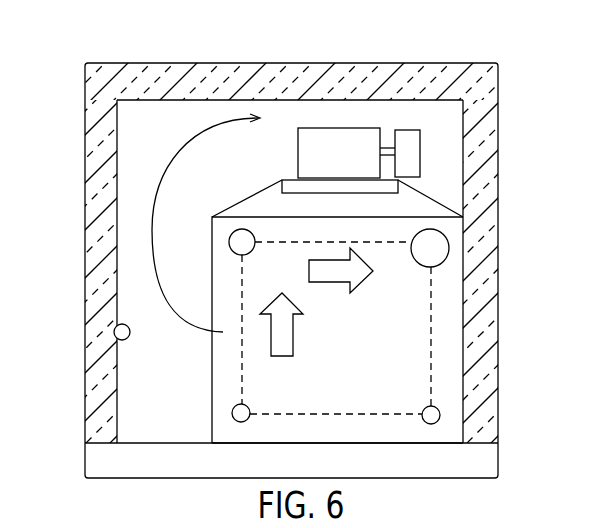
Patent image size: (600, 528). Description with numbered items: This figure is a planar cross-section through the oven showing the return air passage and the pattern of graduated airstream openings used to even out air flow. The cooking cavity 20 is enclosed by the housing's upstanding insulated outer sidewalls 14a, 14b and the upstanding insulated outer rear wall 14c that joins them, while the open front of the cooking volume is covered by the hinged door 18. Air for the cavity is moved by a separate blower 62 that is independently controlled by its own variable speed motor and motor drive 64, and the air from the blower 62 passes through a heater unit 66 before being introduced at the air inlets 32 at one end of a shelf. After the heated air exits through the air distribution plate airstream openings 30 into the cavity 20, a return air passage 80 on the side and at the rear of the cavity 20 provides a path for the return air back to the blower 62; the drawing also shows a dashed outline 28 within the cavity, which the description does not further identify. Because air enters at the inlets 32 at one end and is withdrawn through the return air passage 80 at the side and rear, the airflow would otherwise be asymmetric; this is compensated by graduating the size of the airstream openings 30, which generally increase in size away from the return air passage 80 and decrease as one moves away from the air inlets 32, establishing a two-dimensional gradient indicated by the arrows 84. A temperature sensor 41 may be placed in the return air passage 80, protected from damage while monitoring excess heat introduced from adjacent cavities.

The outer sidewall 14a is at (97, 97).
The outer sidewall 14b is at (483, 322).
The outer rear wall 14c is at (302, 82).
The hinged door 18 is at (463, 463).
The cooking cavity 20 is at (447, 403).
The belt path 28 is at (414, 367).
The airstream openings 30 is at (449, 255).
The air inlets 32 is at (408, 207).
The temperature sensor 41 is at (116, 324).
The blower 62 is at (342, 128).
The motor and motor drive 64 is at (421, 152).
The heater unit 66 is at (335, 187).
The return air passage 80 is at (130, 372).
The arrows 84 is at (332, 283).